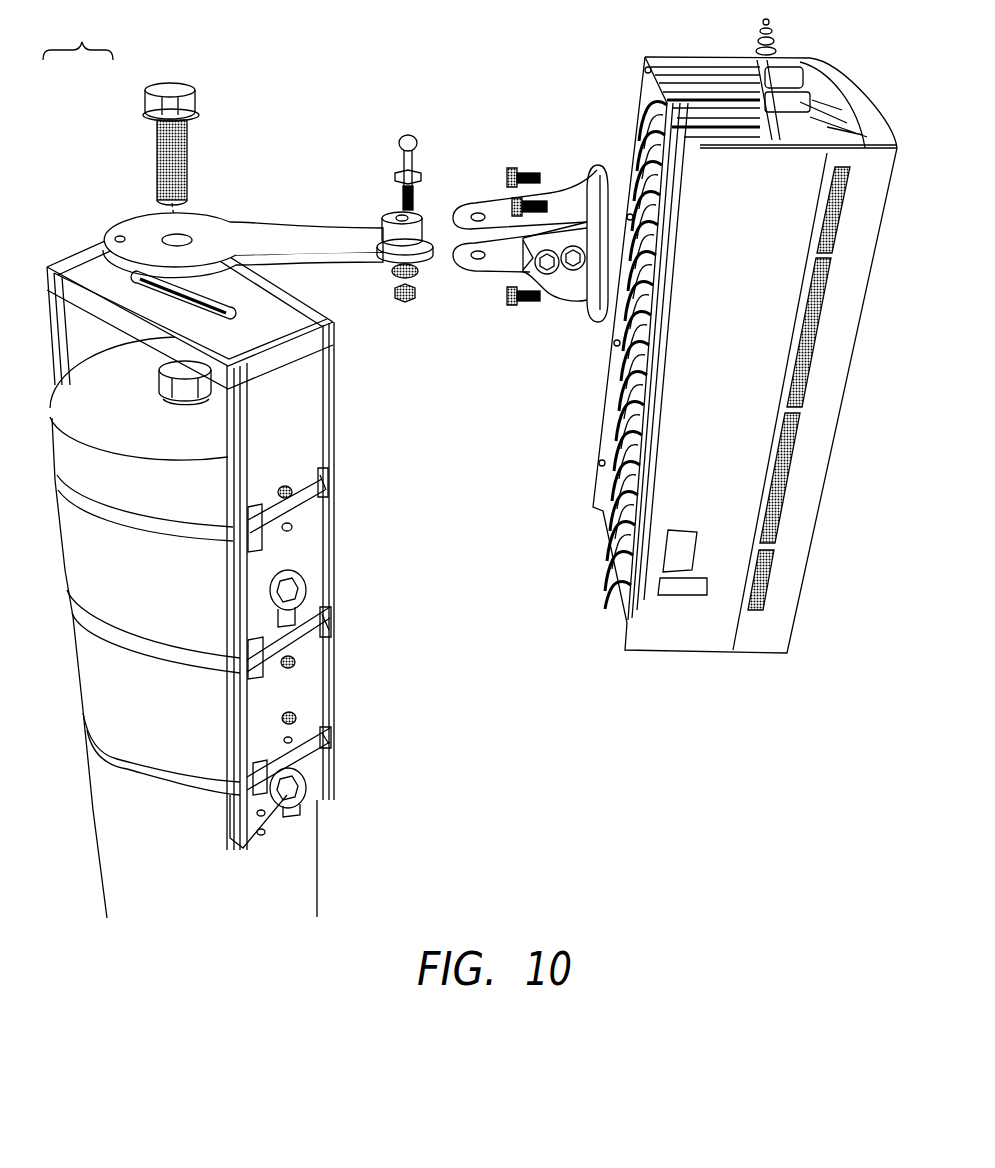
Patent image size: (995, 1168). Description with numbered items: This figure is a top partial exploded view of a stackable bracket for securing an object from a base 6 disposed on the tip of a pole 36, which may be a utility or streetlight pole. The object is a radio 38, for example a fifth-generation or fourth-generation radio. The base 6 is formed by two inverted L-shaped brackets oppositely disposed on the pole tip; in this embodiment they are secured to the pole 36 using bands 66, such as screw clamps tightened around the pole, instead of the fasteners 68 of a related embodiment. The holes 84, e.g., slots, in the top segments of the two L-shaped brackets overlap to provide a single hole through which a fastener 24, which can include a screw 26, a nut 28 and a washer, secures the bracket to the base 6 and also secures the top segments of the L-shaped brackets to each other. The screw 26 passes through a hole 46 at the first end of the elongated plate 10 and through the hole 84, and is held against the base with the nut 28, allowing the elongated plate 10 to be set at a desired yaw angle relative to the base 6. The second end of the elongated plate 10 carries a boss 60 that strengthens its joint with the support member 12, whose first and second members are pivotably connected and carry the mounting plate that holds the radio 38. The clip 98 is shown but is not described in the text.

The base 6 is at (283, 323).
The elongated plate 10 is at (277, 240).
The support member 12 is at (490, 178).
The fastener 24 is at (94, 38).
The screw 26 is at (147, 97).
The nut 28 is at (163, 382).
The pole 36 is at (312, 843).
The radio 38 is at (673, 633).
The hole 46 is at (185, 233).
The boss 60 is at (385, 228).
The band 66 is at (87, 500).
The fastener 68 is at (298, 596).
The hole 84 is at (222, 300).
The clip 98 is at (325, 477).